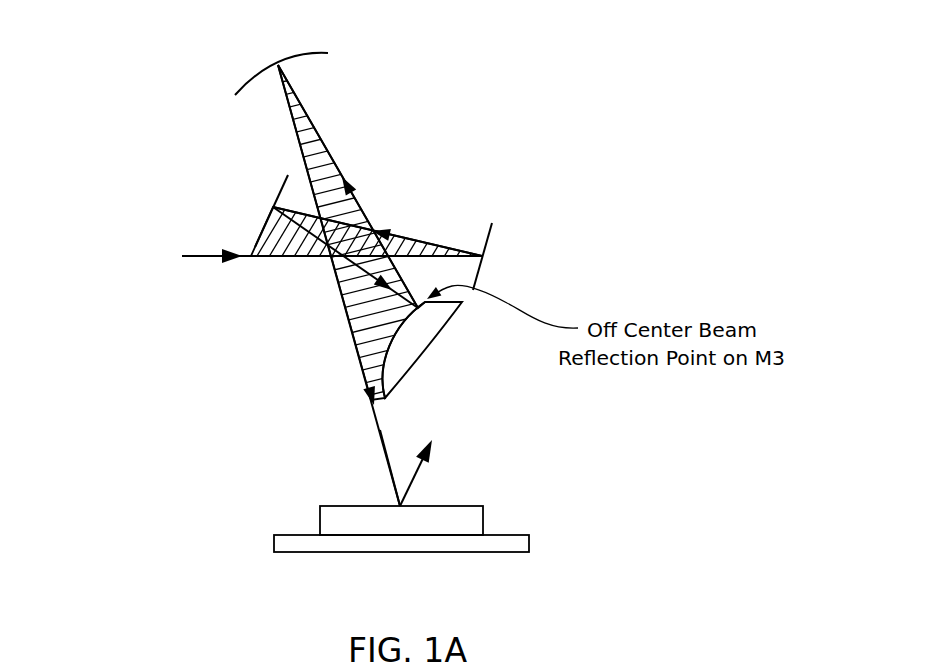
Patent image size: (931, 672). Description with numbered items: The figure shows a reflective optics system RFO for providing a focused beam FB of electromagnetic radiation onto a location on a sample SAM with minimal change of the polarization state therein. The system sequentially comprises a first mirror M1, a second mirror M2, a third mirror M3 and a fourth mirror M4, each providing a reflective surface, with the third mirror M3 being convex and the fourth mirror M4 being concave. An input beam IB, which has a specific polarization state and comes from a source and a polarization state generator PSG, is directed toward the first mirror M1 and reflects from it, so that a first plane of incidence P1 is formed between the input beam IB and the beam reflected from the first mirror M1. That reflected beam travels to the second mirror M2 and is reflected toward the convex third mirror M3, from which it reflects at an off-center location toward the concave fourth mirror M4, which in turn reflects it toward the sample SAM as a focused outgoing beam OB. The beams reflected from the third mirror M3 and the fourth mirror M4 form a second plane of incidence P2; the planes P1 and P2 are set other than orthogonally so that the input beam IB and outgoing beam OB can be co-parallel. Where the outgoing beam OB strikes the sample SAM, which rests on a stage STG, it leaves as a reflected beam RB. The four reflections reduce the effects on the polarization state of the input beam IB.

The second plane of incidence P2 is at (338, 144).
The first plane of incidence P1 is at (415, 220).
The reflective optics system RFO is at (688, 115).
The input beam IB is at (196, 242).
The polarization state generator PSG is at (139, 330).
The outgoing beam OB is at (365, 420).
The focused beam FB is at (382, 490).
The reflected beam RB is at (526, 469).
The sample SAM is at (418, 529).
The stage STG is at (545, 515).
The first mirror M1 is at (500, 270).
The second mirror M2 is at (262, 195).
The third mirror M3 is at (442, 365).
The fourth mirror M4 is at (264, 48).